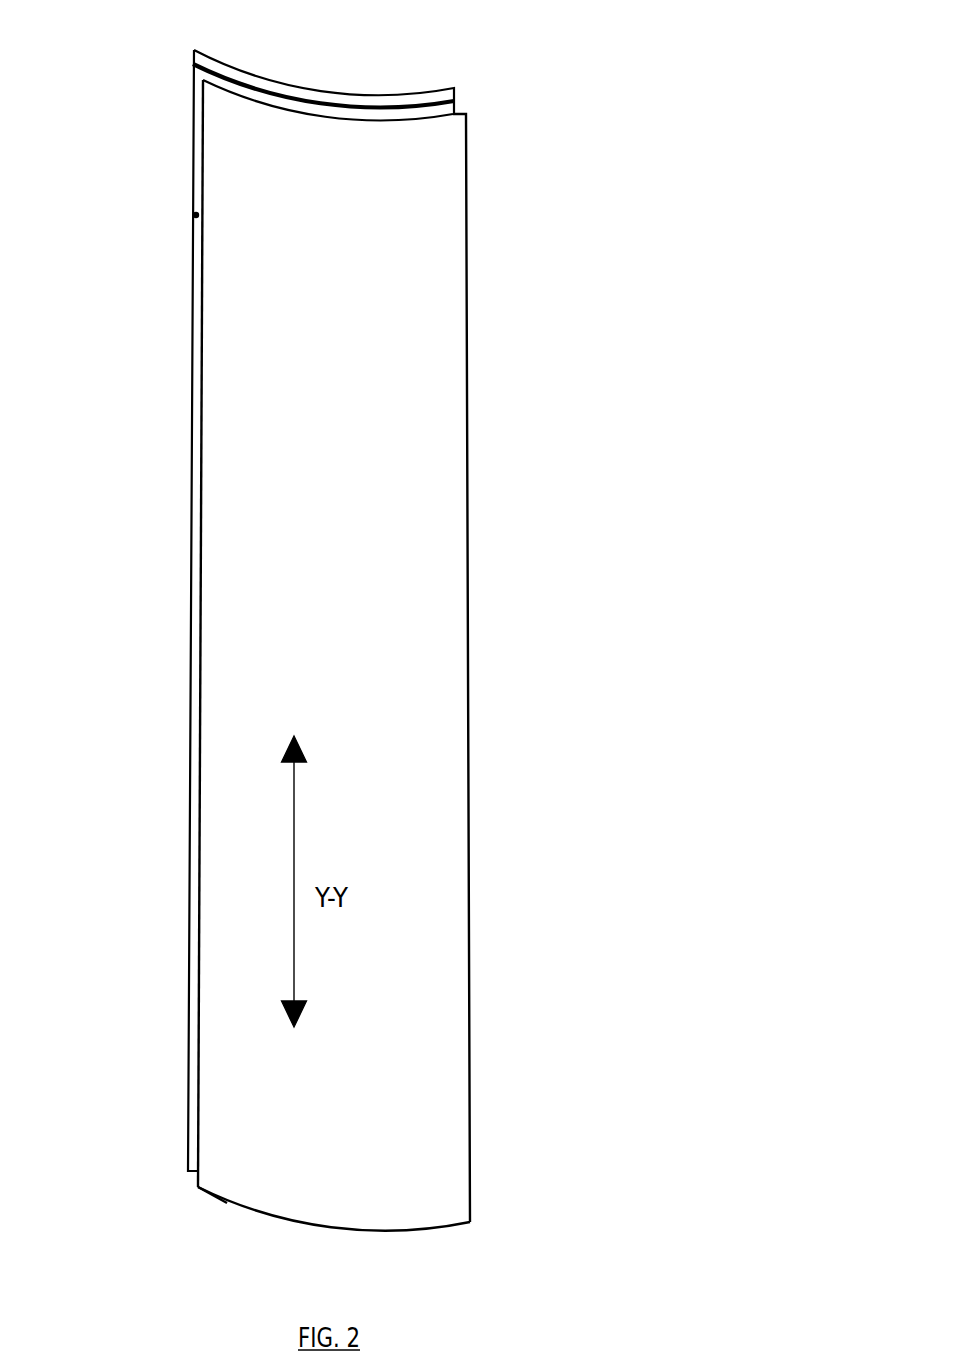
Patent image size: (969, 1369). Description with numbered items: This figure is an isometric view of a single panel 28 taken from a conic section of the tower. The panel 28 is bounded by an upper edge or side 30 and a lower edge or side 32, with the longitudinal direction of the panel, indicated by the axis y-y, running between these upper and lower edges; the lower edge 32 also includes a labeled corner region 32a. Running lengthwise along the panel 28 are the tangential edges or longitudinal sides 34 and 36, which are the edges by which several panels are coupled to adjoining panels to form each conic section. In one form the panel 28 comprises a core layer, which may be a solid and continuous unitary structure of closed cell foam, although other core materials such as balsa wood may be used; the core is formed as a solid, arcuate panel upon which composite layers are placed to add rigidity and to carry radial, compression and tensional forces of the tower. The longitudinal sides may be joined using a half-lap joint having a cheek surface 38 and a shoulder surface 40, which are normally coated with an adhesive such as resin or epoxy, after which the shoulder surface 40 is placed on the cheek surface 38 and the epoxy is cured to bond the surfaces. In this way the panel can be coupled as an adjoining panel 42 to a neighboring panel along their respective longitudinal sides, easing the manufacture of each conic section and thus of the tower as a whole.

The panel 28 is at (330, 649).
The upper edge 30 is at (312, 87).
The lower edge 32 is at (330, 1227).
The bottom corner 32a is at (227, 1202).
The tangential edge 34 is at (191, 450).
The tangential edge 36 is at (468, 343).
The cheek surface 38 is at (196, 215).
The shoulder surface 40 is at (202, 245).
The adjoining panel 42 is at (328, 535).